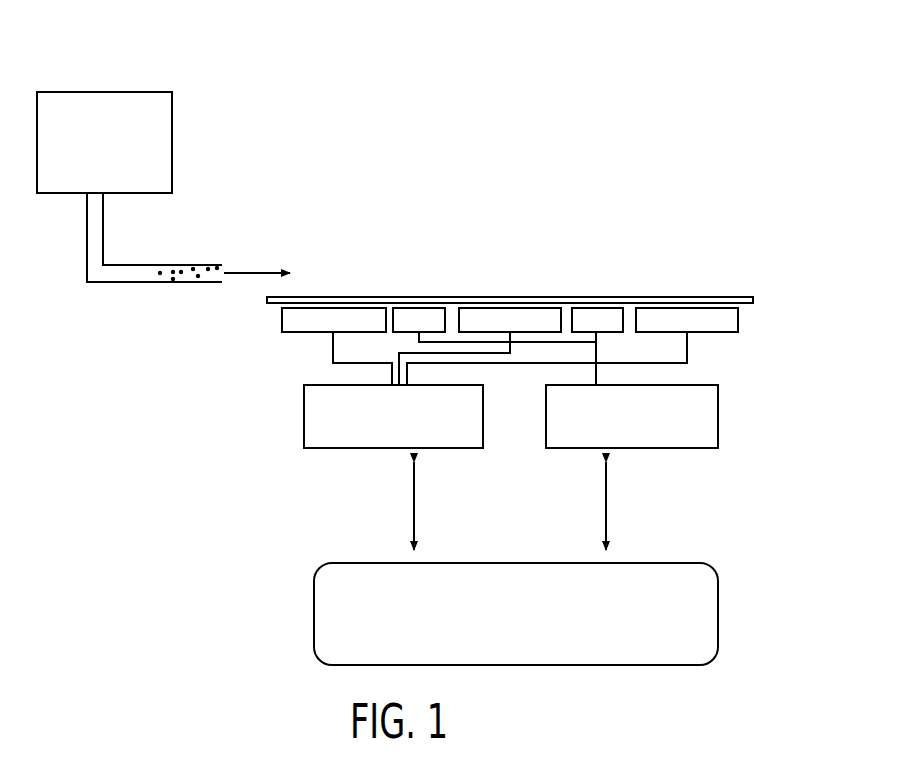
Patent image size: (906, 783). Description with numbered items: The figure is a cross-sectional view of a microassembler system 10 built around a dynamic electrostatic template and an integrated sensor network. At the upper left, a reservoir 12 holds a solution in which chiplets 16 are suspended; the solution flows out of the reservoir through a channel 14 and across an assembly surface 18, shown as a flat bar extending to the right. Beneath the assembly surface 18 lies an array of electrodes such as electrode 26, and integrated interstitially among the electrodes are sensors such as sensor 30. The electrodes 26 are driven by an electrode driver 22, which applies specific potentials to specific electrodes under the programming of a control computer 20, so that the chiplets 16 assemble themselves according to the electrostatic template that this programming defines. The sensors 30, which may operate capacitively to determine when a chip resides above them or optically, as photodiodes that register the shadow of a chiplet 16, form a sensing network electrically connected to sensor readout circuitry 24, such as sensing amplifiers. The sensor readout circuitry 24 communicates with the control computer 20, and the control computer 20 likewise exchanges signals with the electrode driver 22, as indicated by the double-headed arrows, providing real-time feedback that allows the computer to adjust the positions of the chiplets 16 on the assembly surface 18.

The microassembler system 10 is at (707, 150).
The reservoir 12 is at (172, 121).
The channel 14 is at (134, 283).
The chiplets 16 is at (199, 278).
The assembly surface 18 is at (753, 298).
The control computer 20 is at (719, 605).
The electrode driver 22 is at (467, 450).
The sensor readout circuitry 24 is at (698, 450).
The electrodes 26 is at (333, 307).
The sensors 30 is at (429, 307).